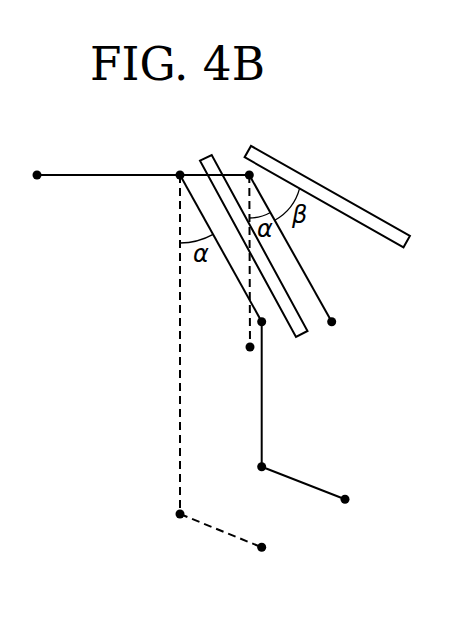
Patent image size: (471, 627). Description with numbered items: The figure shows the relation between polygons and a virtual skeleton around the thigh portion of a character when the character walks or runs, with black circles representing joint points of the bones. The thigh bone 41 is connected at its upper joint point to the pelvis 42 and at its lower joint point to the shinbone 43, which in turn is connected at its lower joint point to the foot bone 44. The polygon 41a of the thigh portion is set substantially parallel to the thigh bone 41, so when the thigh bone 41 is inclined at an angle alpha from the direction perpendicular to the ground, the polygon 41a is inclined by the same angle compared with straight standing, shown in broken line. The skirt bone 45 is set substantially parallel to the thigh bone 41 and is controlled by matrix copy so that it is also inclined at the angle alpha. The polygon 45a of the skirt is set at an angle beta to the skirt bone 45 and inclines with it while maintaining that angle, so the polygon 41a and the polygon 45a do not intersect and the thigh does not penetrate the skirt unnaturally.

The thigh bone 41 is at (237, 282).
The polygon of a thigh portion 41a is at (198, 159).
The pelvis 42 is at (102, 177).
The shinbone 43 is at (257, 430).
The foot bone 44 is at (317, 491).
The skirt bone 45 is at (326, 293).
The polygon of the skirt 45a is at (352, 202).